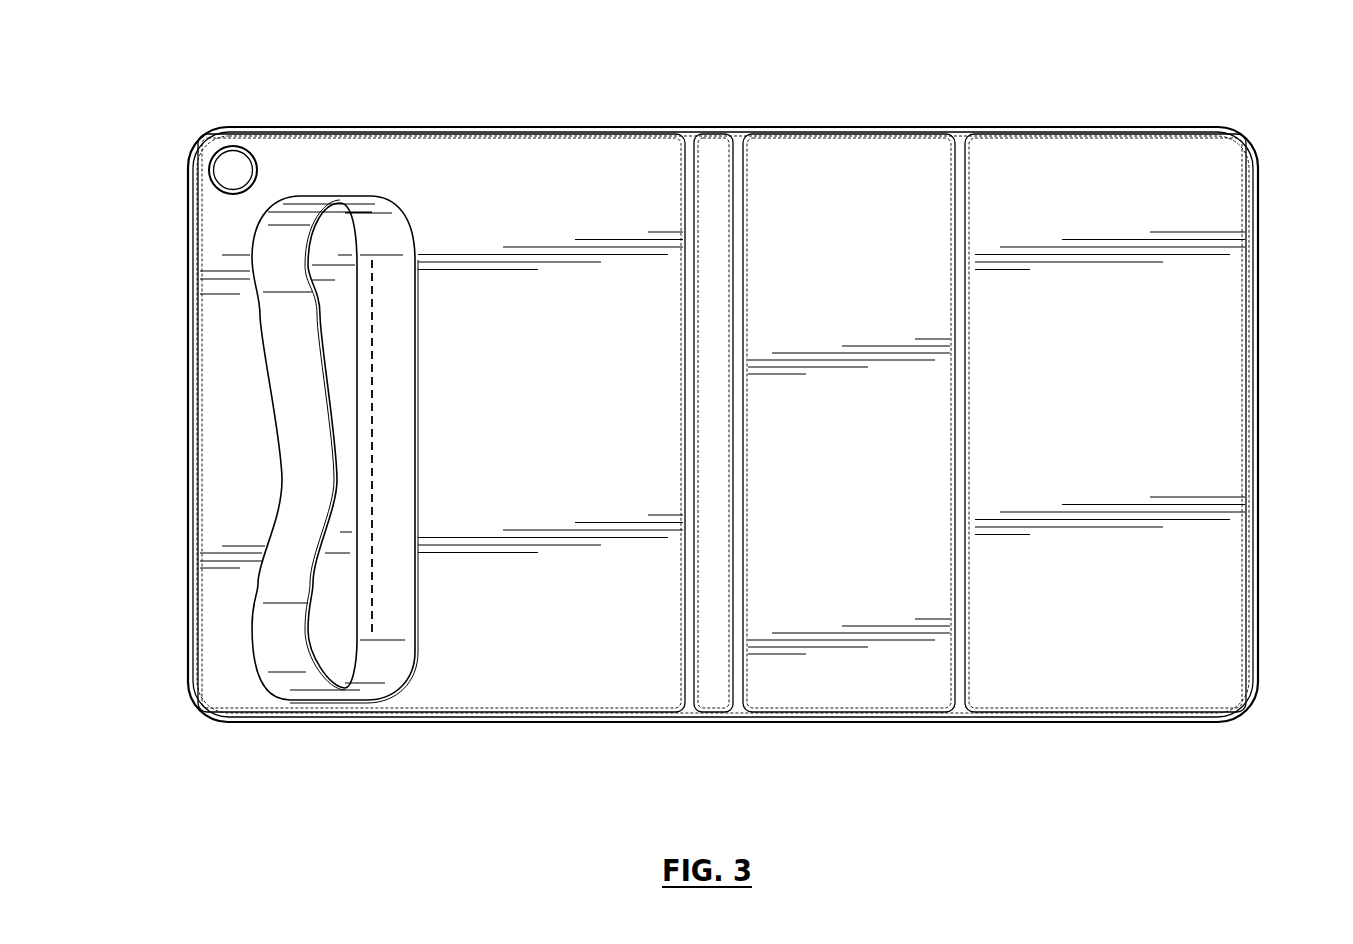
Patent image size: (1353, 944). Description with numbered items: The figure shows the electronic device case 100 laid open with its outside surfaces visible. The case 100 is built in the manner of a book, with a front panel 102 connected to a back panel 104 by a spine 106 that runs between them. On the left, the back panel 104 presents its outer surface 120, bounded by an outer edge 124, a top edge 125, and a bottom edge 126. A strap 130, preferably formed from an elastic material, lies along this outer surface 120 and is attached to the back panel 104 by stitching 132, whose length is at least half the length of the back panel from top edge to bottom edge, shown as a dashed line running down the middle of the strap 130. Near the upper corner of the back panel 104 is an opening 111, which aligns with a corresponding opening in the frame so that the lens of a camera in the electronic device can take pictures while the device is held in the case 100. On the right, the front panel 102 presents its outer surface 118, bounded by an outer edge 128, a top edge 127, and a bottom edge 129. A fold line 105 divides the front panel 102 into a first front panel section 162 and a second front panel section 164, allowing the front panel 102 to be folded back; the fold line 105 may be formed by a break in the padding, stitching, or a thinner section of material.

The electronic device case 100 is at (610, 744).
The front panel 102 is at (1068, 682).
The back panel 104 is at (194, 366).
The fold line 105 is at (958, 680).
The spine 106 is at (715, 702).
The opening 111 is at (222, 170).
The outer surface 118 is at (1060, 448).
The outer surface 120 is at (500, 448).
The outer edge 124 is at (188, 622).
The top edge 125 is at (437, 127).
The bottom edge 126 is at (372, 722).
The top edge 127 is at (1020, 127).
The outer edge 128 is at (1262, 408).
The bottom edge 129 is at (1160, 722).
The strap 130 is at (285, 517).
The stitching 132 is at (375, 579).
The first front panel section 162 is at (888, 160).
The second front panel section 164 is at (1127, 160).